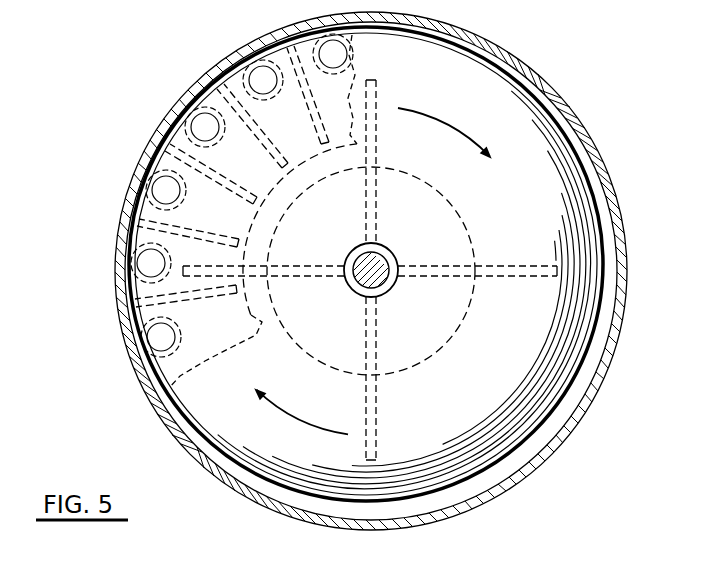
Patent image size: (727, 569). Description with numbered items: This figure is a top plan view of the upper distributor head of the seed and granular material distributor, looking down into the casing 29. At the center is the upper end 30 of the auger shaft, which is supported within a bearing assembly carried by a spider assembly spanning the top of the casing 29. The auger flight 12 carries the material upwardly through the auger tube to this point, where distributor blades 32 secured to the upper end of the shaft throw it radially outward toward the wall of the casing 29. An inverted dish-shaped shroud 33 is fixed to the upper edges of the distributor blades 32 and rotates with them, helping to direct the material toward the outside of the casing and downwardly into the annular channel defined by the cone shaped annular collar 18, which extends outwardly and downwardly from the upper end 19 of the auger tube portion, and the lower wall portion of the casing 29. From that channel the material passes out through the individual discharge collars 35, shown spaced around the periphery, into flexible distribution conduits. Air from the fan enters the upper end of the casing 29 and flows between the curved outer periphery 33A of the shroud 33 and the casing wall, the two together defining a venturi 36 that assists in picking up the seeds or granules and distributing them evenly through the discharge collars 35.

The auger flight 12 is at (447, 213).
The cone shaped annular collar 18 is at (266, 244).
The upper end of the auger tube portion 19 is at (291, 192).
The casing 29 is at (591, 152).
The upper end of the auger shaft 30 is at (362, 264).
The distributor blades 32 is at (457, 270).
The inverted dish-shaped shroud 33 is at (486, 98).
The outer periphery of the dish-shaped shroud 33A is at (548, 118).
The discharge collars 35 is at (263, 96).
The venturi 36 is at (603, 194).